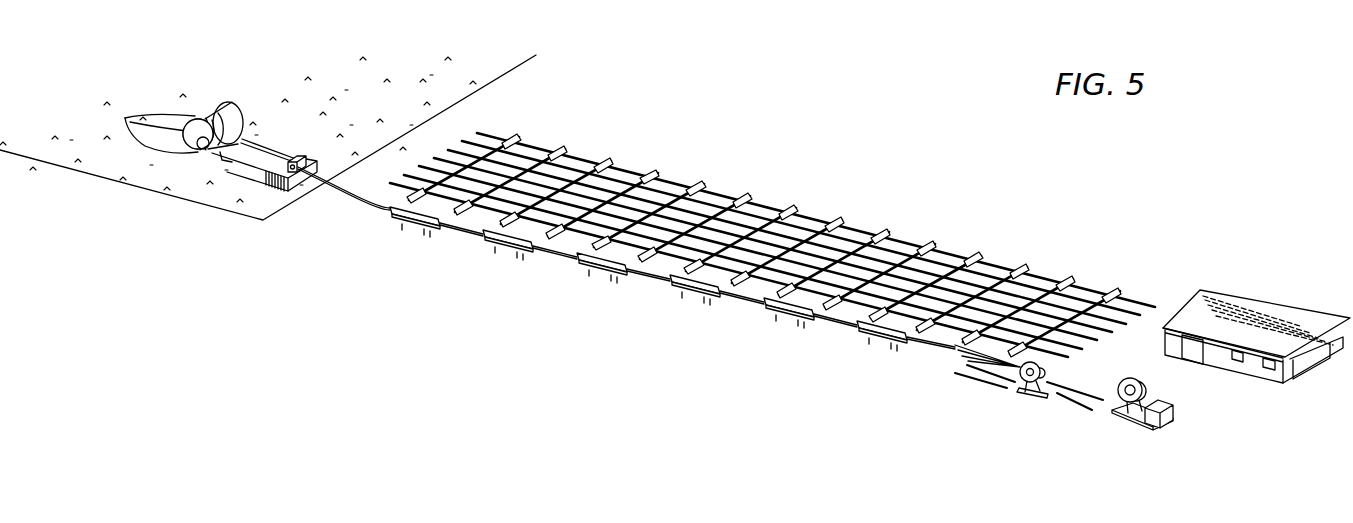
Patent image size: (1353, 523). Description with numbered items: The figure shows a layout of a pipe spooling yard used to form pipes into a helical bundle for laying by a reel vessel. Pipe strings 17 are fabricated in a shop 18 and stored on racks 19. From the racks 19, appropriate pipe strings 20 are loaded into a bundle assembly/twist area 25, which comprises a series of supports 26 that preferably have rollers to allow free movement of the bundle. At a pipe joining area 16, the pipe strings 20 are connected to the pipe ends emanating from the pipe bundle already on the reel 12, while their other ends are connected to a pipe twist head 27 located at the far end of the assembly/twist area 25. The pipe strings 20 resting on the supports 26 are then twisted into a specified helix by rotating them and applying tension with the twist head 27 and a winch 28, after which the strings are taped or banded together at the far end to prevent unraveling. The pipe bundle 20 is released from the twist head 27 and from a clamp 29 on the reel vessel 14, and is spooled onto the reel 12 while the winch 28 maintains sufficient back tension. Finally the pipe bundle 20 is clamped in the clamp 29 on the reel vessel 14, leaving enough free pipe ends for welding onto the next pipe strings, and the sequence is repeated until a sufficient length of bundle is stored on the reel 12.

The reel 12 is at (195, 132).
The reel vessel 14 is at (259, 88).
The pipe joining area 16 is at (325, 188).
The pipe strings 17 is at (580, 154).
The shop 18 is at (1264, 295).
The racks 19 is at (804, 199).
The pipe strings 20 is at (648, 278).
The bundle assembly/twist area 25 is at (786, 340).
The supports 26 is at (768, 315).
The pipe twist head 27 is at (1033, 402).
The winch 28 is at (1130, 424).
The clamp 29 is at (305, 152).